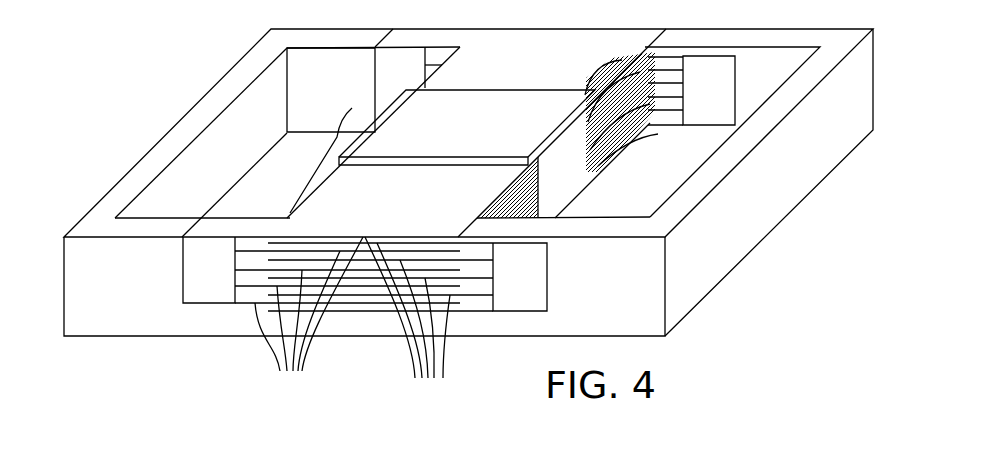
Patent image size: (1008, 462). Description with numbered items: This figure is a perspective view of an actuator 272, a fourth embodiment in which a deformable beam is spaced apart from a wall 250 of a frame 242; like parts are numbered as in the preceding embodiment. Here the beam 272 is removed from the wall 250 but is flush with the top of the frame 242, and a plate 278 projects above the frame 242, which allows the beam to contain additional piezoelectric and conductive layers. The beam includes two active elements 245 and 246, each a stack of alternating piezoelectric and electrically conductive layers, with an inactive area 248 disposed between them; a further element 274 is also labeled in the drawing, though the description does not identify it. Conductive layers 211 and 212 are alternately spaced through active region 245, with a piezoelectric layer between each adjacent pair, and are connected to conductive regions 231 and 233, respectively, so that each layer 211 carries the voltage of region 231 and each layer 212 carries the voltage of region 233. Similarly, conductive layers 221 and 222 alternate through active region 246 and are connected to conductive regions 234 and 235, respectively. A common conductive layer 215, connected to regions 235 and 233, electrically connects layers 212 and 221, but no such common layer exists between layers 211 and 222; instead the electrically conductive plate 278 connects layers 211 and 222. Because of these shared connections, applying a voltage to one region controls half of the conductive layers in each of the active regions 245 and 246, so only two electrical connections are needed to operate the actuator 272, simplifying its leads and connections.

The conductive layers 211 is at (347, 320).
The conductive layers 212 is at (380, 323).
The common conductive layer 215 is at (568, 205).
The conductive layers 221 is at (628, 68).
The conductive layers 222 is at (634, 135).
The conductive region 231 is at (183, 270).
The conductive region 233 is at (528, 277).
The conductive region 234 is at (377, 69).
The conductive region 235 is at (718, 62).
The frame 242 is at (130, 183).
The active element 245 is at (408, 190).
The active element 246 is at (678, 113).
The inactive area 248 is at (563, 173).
The wall 250 is at (262, 185).
The actuator 272 is at (147, 65).
The arm 274 is at (373, 132).
The plate 278 is at (493, 104).